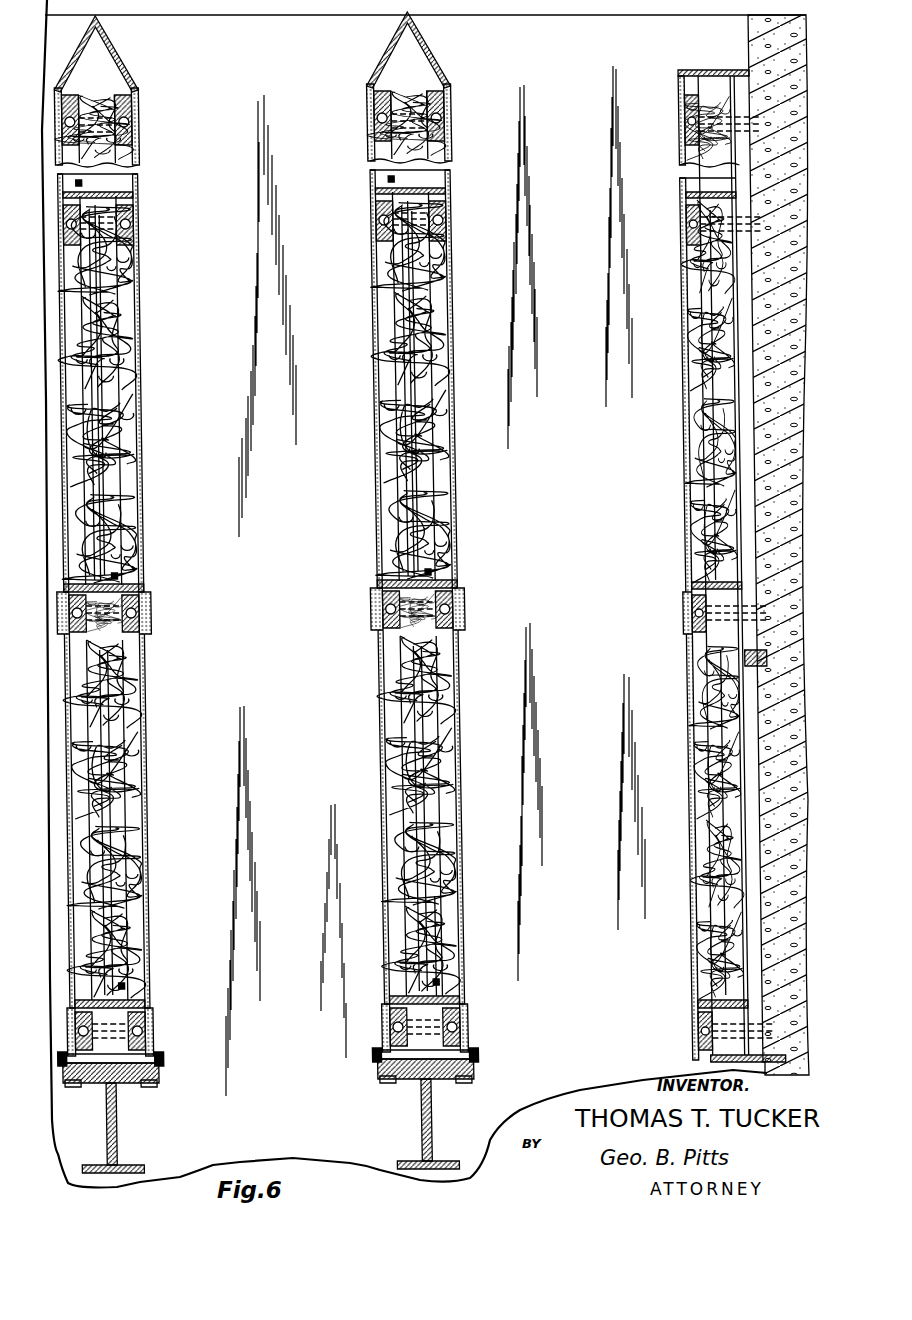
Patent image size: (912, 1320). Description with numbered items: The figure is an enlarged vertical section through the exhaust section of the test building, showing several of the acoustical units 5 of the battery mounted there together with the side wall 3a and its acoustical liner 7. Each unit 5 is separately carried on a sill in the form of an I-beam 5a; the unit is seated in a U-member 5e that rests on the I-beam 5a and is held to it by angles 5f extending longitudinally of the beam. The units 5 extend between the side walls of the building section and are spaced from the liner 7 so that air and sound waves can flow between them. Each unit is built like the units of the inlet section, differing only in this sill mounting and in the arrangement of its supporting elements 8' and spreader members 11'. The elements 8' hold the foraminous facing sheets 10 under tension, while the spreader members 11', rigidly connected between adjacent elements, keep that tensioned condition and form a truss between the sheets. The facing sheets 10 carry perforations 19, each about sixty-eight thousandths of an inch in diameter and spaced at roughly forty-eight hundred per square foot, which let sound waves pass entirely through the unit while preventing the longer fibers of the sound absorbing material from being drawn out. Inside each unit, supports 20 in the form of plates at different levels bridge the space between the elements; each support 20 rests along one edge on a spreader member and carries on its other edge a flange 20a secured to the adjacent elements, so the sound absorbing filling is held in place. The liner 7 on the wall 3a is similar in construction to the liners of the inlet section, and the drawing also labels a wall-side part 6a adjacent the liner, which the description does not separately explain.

The foraminous facing sheet 10 is at (70, 817).
The perforations 19 is at (145, 457).
The support 20 is at (142, 562).
The flange 20a is at (126, 578).
The supporting element 8' is at (399, 545).
The spreader member 11' is at (459, 581).
The acoustical liner 7 is at (592, 565).
The side wall 3a is at (768, 662).
The wall channel 6a is at (690, 894).
The acoustical unit 5 is at (267, 1030).
The U-member 5e is at (466, 1042).
The angles 5f is at (157, 1074).
The I-beam 5a is at (116, 1118).